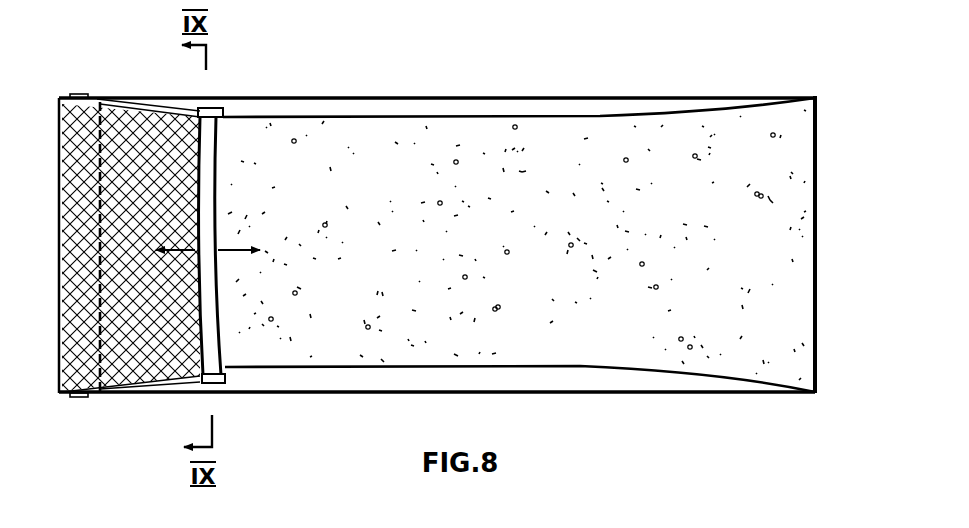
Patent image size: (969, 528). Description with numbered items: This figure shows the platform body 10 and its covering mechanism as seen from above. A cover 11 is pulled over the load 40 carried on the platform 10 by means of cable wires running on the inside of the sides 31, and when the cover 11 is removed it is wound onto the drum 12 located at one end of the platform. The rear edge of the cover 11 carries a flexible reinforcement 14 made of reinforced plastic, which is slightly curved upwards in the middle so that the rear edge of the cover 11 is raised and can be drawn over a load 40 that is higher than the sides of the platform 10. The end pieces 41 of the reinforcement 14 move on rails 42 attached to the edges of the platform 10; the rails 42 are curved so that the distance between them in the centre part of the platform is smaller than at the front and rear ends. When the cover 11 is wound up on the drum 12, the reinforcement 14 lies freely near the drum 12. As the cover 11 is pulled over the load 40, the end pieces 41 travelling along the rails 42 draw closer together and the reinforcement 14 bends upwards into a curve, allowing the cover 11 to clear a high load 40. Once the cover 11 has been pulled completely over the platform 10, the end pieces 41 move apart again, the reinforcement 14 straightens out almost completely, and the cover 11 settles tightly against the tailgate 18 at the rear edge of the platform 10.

The platform body 10 is at (617, 72).
The cover 11 is at (127, 128).
The drum 12 is at (78, 93).
The rear edge reinforcement 14 is at (198, 216).
The tailgate 18 is at (818, 252).
The sides 31 is at (420, 97).
The load 40 is at (511, 155).
The end pieces 41 is at (221, 108).
The rails 42 is at (331, 117).